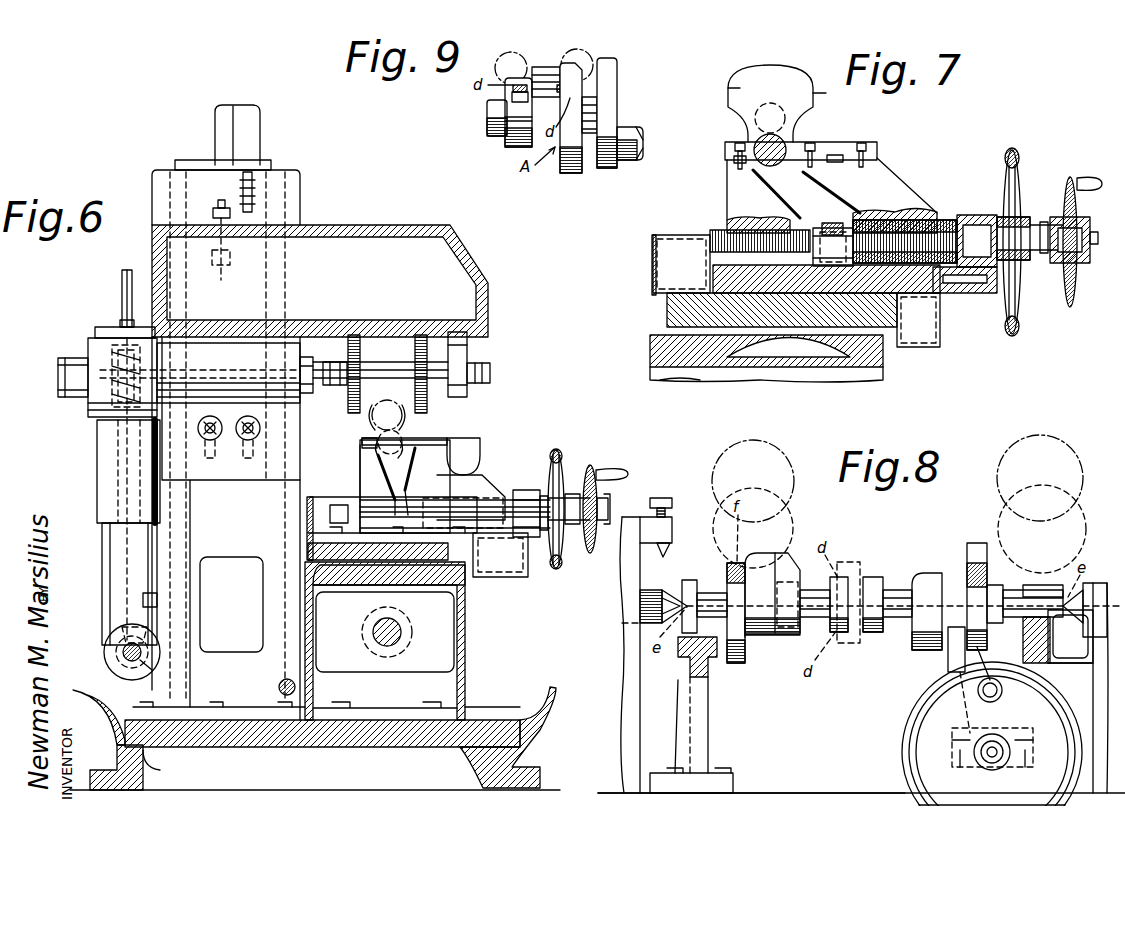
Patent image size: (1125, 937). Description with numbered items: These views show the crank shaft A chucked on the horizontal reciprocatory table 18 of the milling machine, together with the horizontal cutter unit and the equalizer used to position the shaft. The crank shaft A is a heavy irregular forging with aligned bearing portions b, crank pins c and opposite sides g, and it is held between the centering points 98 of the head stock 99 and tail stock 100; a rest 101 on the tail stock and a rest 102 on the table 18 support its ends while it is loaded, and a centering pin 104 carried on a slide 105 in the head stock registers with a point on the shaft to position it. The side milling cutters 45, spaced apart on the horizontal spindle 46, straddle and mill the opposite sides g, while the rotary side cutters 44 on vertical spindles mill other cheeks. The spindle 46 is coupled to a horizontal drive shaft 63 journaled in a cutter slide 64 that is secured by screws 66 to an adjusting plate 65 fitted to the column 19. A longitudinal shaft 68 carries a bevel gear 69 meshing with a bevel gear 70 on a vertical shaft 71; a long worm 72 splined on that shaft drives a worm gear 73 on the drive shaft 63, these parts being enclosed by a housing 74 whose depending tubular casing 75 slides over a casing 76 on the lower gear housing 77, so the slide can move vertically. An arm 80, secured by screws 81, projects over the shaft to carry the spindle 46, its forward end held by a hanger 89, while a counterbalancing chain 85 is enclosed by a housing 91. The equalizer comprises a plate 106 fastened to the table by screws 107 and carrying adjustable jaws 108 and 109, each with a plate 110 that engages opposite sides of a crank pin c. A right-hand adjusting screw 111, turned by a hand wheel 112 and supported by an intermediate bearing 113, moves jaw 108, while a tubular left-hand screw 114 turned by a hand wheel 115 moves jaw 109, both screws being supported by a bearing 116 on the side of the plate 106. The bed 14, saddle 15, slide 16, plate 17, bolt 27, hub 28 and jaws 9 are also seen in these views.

In FIG. 6, the bed 14 is at (492, 746).
In FIG. 6, the saddle body 15 is at (455, 627).
In FIG. 7, the saddle body 15 is at (680, 372).
In FIG. 6, the cross slide 16 is at (352, 566).
In FIG. 7, the cross slide 16 is at (705, 350).
In FIG. 6, the slide plate 17 is at (300, 530).
In FIG. 7, the slide plate 17 is at (653, 280).
In FIG. 6, the reciprocatory table 18 is at (473, 549).
In FIG. 7, the reciprocatory table 18 is at (866, 312).
In FIG. 8, the reciprocatory table 18 is at (837, 797).
In FIG. 6, the column 19 is at (300, 200).
In FIG. 6, the bolt 27 is at (282, 685).
In FIG. 6, the pivot hub 28 is at (395, 625).
In FIG. 9, the rotary side cutters 44 is at (522, 70).
In FIG. 8, the rotary side cutters 44 is at (860, 562).
In FIG. 6, the side milling cutters 45 is at (350, 342).
In FIG. 8, the side milling cutters 45 is at (793, 522).
In FIG. 6, the horizontal spindles 46 is at (382, 368).
In FIG. 6, the horizontal drive shaft 63 is at (225, 382).
In FIG. 6, the cutter slide 64 is at (276, 367).
In FIG. 6, the adjusting plate 65 is at (231, 522).
In FIG. 6, the screws 66 is at (229, 437).
In FIG. 6, the longitudinal shaft 68 is at (123, 655).
In FIG. 6, the bevel gears 69 is at (150, 670).
In FIG. 6, the bevel gear 70 is at (120, 635).
In FIG. 6, the vertical shaft 71 is at (125, 292).
In FIG. 6, the worm 72 is at (112, 334).
In FIG. 6, the worm gear 73 is at (97, 357).
In FIG. 6, the housing 74 is at (105, 378).
In FIG. 6, the depending tubular casing 75 is at (115, 450).
In FIG. 6, the tubular casing 76 is at (118, 541).
In FIG. 6, the lower gear housing 77 is at (117, 620).
In FIG. 6, the arm 80 is at (320, 446).
In FIG. 6, the screws 81 is at (225, 205).
In FIG. 6, the chain 85 is at (253, 190).
In FIG. 6, the hanger 89 is at (458, 350).
In FIG. 6, the housing 91 is at (248, 134).
In FIG. 8, the centering points 98 is at (687, 600).
In FIG. 8, the head stock 99 is at (627, 647).
In FIG. 6, the tail stock 100 is at (362, 482).
In FIG. 8, the tail stock 100 is at (1096, 677).
In FIG. 6, the rest 101 is at (478, 442).
In FIG. 8, the rest 101 is at (1032, 640).
In FIG. 8, the rest 102 is at (707, 663).
In FIG. 8, the centering pin 104 is at (678, 491).
In FIG. 8, the slide 105 is at (690, 515).
In FIG. 6, the plate 106 is at (410, 511).
In FIG. 7, the plate 106 is at (710, 270).
In FIG. 6, the screws 107 is at (403, 518).
In FIG. 7, the screws 107 is at (760, 278).
In FIG. 6, the jaw 108 is at (372, 489).
In FIG. 7, the jaw 108 is at (742, 190).
In FIG. 6, the jaw 109 is at (470, 488).
In FIG. 7, the jaw 109 is at (880, 187).
In FIG. 8, the jaw 109 is at (955, 670).
In FIG. 6, the plate 110 is at (368, 449).
In FIG. 7, the plate 110 is at (730, 142).
In FIG. 7, the adjusting screw 111 is at (720, 232).
In FIG. 6, the hand wheel 112 is at (593, 468).
In FIG. 7, the hand wheel 112 is at (1067, 177).
In FIG. 8, the hand wheel 112 is at (908, 727).
In FIG. 7, the intermediate bearing 113 is at (838, 223).
In FIG. 7, the adjusting screw 114 is at (945, 227).
In FIG. 6, the hand wheel 115 is at (557, 458).
In FIG. 7, the hand wheel 115 is at (1011, 153).
In FIG. 8, the hand wheel 115 is at (923, 698).
In FIG. 6, the bearing 116 is at (533, 532).
In FIG. 7, the bearing 116 is at (982, 292).
In FIG. 6, the gripping jaws 9 is at (372, 420).
In FIG. 7, the crank shaft A is at (798, 62).
In FIG. 8, the crank shaft A is at (889, 572).
In FIG. 7, the bearing portions b is at (769, 117).
In FIG. 8, the bearing portions b is at (712, 588).
In FIG. 7, the crank pins c is at (783, 167).
In FIG. 8, the crank pins c is at (758, 563).
In FIG. 7, the opposite sides g is at (728, 91).
In FIG. 8, the opposite sides g is at (733, 565).